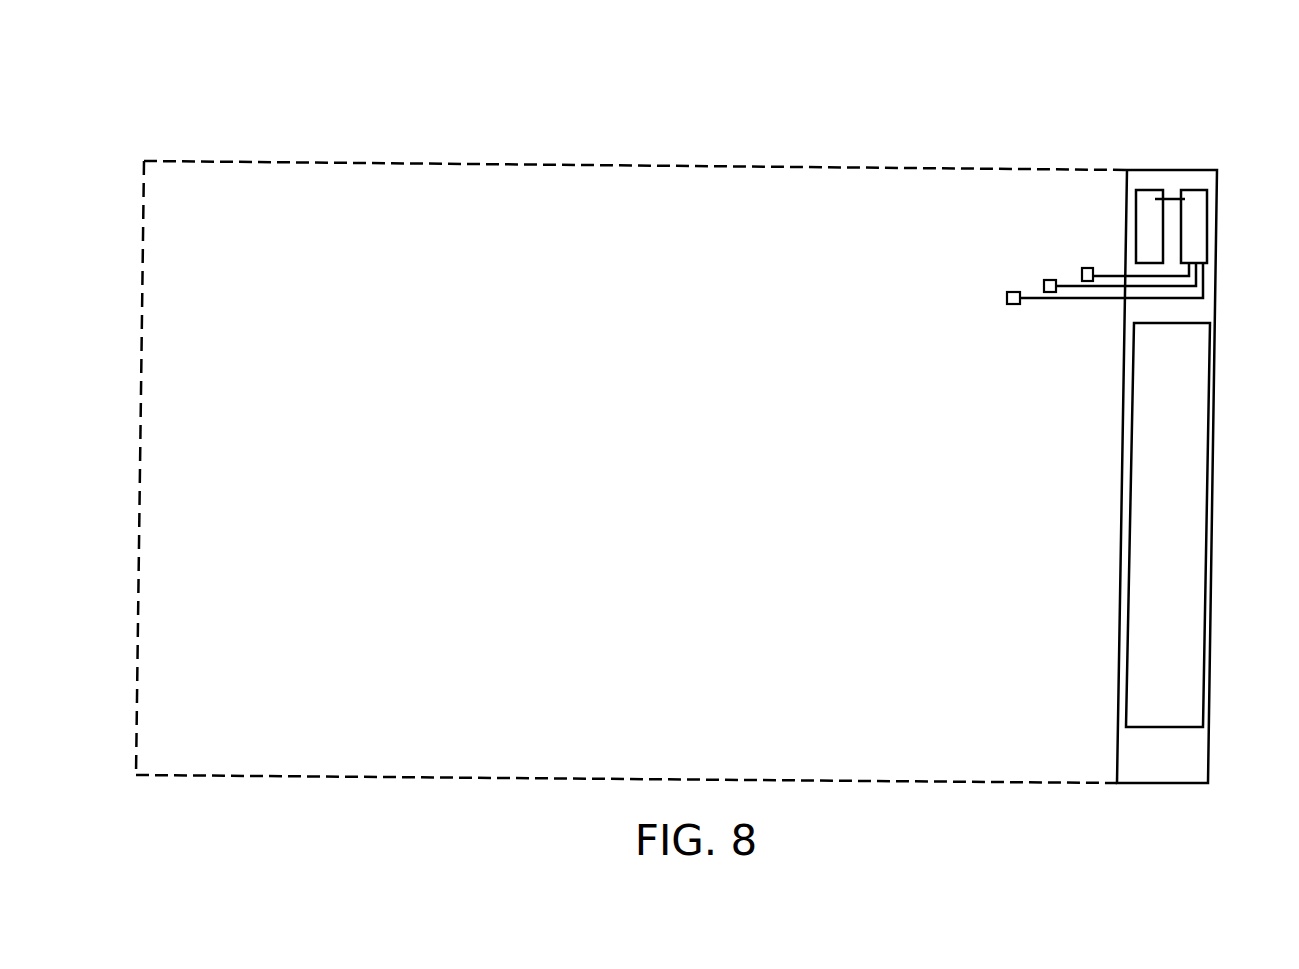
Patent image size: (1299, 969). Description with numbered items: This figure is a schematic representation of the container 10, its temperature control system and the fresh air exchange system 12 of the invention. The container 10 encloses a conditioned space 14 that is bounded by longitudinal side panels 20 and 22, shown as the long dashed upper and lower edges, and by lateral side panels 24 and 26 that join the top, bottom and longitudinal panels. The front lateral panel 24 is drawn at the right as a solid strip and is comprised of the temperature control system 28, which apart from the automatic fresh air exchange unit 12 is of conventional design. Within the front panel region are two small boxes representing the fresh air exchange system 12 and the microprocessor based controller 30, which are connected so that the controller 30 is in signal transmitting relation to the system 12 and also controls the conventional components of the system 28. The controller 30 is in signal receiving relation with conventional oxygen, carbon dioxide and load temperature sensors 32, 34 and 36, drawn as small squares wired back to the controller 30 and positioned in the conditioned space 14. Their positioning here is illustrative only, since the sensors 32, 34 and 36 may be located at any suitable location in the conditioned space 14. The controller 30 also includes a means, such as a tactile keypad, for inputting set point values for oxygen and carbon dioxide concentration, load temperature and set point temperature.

The container 10 is at (536, 105).
The fresh air exchange system 12 is at (1150, 197).
The conditioned space 14 is at (627, 497).
The longitudinal side panel 20 is at (392, 163).
The longitudinal side panel 22 is at (672, 768).
The front lateral panel 24 is at (1123, 514).
The lateral side panel 26 is at (141, 462).
The temperature control system 28 is at (1194, 497).
The microprocessor based controller 30 is at (1198, 231).
The oxygen sensor 32 is at (1088, 268).
The carbon dioxide sensor 34 is at (1050, 280).
The load temperature sensor 36 is at (1013, 304).